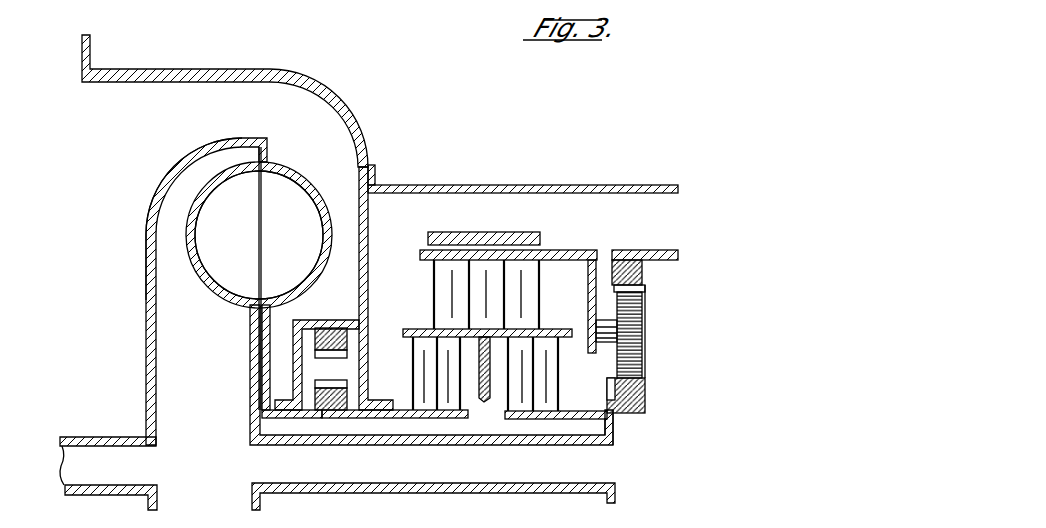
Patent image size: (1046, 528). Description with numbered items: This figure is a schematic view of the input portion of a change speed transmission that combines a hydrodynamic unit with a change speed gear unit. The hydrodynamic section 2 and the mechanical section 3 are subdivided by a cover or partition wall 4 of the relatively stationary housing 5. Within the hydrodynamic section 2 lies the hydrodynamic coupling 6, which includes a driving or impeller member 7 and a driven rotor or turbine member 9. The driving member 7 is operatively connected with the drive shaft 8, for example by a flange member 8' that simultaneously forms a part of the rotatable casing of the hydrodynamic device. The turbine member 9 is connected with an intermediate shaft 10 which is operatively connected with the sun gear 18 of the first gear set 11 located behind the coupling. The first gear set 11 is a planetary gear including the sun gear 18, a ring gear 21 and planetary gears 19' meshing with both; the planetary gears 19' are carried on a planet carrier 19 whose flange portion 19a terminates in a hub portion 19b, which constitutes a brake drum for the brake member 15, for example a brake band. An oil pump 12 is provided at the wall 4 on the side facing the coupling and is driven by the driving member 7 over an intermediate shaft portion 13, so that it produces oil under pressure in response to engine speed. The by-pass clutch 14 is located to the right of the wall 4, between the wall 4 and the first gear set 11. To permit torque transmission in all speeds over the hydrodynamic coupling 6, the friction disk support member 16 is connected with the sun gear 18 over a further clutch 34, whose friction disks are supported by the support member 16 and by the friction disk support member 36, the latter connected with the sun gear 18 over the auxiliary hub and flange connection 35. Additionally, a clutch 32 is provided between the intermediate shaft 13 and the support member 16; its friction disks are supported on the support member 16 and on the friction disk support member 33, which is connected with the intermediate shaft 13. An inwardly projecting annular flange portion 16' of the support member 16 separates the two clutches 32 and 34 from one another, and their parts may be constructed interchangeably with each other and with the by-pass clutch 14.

The hydrodynamic section 2 is at (98, 128).
The mechanical section 3 is at (680, 243).
The cover or partition wall 4 is at (508, 287).
The housing 5 is at (246, 70).
The hydrodynamic coupling 6 is at (283, 149).
The driving member 7 is at (291, 188).
The drive shaft 8 is at (108, 450).
The flange member 8' is at (189, 291).
The driven member 9 is at (210, 256).
The intermediate shaft 10 is at (387, 445).
The first gear set 11 is at (650, 383).
The oil pump 12 is at (311, 368).
The intermediate shaft portion 13 is at (335, 420).
The by-pass clutch 14 is at (422, 300).
The brake member 15 is at (484, 240).
The friction disk support member 16 is at (476, 350).
The annularly shaped flange portion 16' is at (489, 381).
The sun gear 18 is at (646, 414).
The planet carrier 19 is at (598, 349).
The planetary gears 19' is at (654, 331).
The flange portion 19a is at (588, 297).
The hub portion 19b is at (420, 256).
The ring gear 21 is at (645, 274).
The clutch 32 is at (412, 385).
The friction disk support member 33 is at (448, 420).
The further clutch 34 is at (567, 387).
The auxiliary hub and flange connection 35 is at (598, 420).
The friction disk support member 36 is at (540, 420).